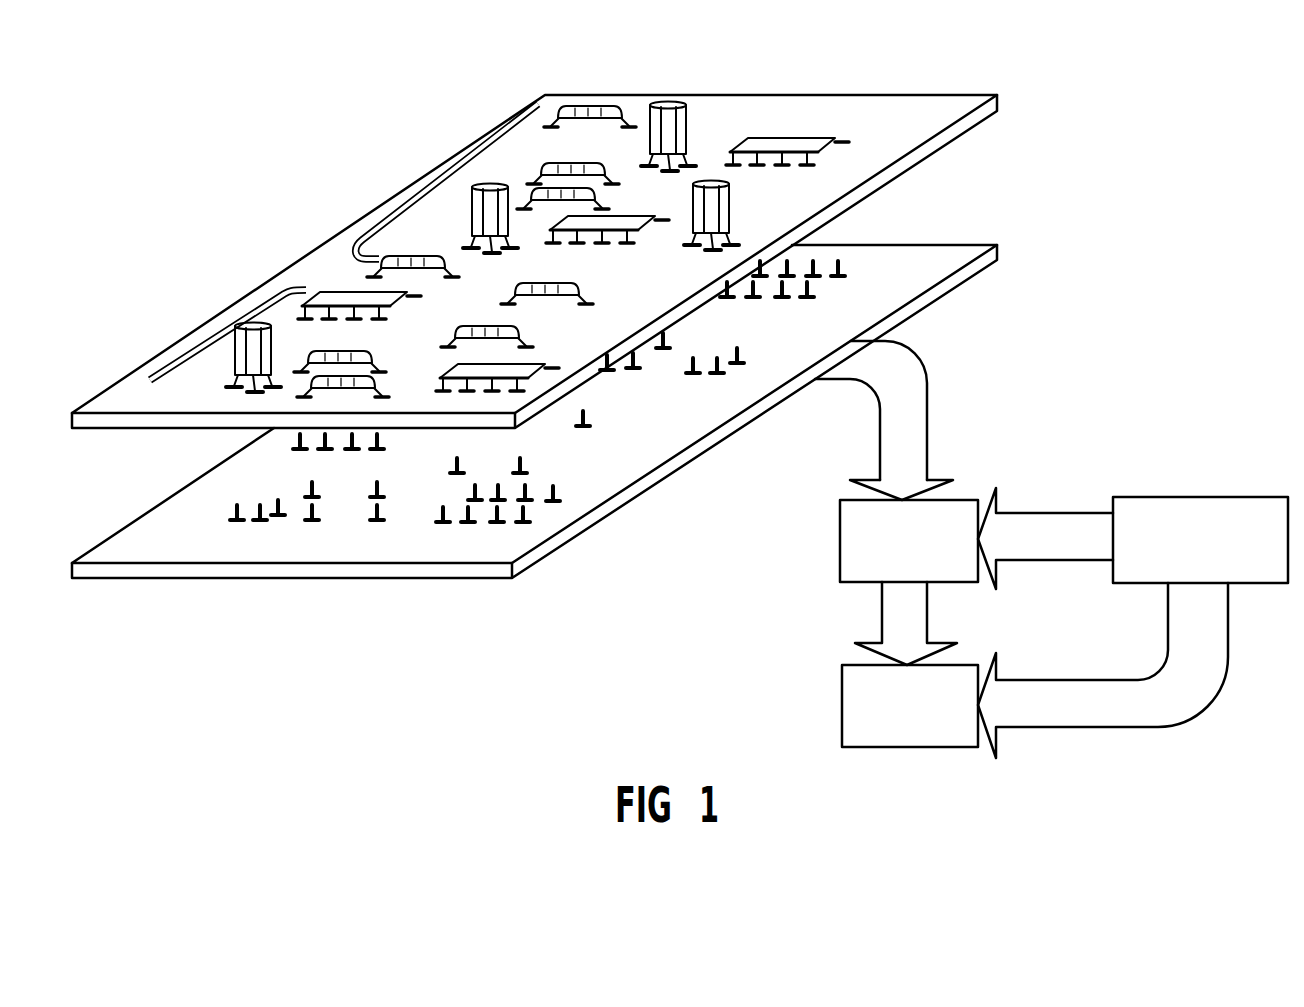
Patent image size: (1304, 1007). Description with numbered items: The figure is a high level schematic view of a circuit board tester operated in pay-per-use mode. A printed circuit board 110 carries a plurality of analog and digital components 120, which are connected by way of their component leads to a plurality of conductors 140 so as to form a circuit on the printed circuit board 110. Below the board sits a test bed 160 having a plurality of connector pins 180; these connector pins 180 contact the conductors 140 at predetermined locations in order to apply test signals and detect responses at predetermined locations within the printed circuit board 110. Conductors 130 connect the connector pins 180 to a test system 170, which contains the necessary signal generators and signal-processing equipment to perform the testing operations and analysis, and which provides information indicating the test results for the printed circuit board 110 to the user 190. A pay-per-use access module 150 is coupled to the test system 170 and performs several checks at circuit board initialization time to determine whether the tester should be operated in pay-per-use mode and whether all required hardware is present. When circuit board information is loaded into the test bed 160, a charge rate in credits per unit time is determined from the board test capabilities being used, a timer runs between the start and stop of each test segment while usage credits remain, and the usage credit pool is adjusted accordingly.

The printed circuit board 110 is at (788, 93).
The components 120 is at (630, 137).
The conductors 130 is at (853, 380).
The conductors 140 is at (257, 308).
The pay-per-use access module 150 is at (1217, 494).
The test bed 160 is at (370, 573).
The test system 170 is at (838, 518).
The connector pins 180 is at (283, 529).
The user 190 is at (840, 685).